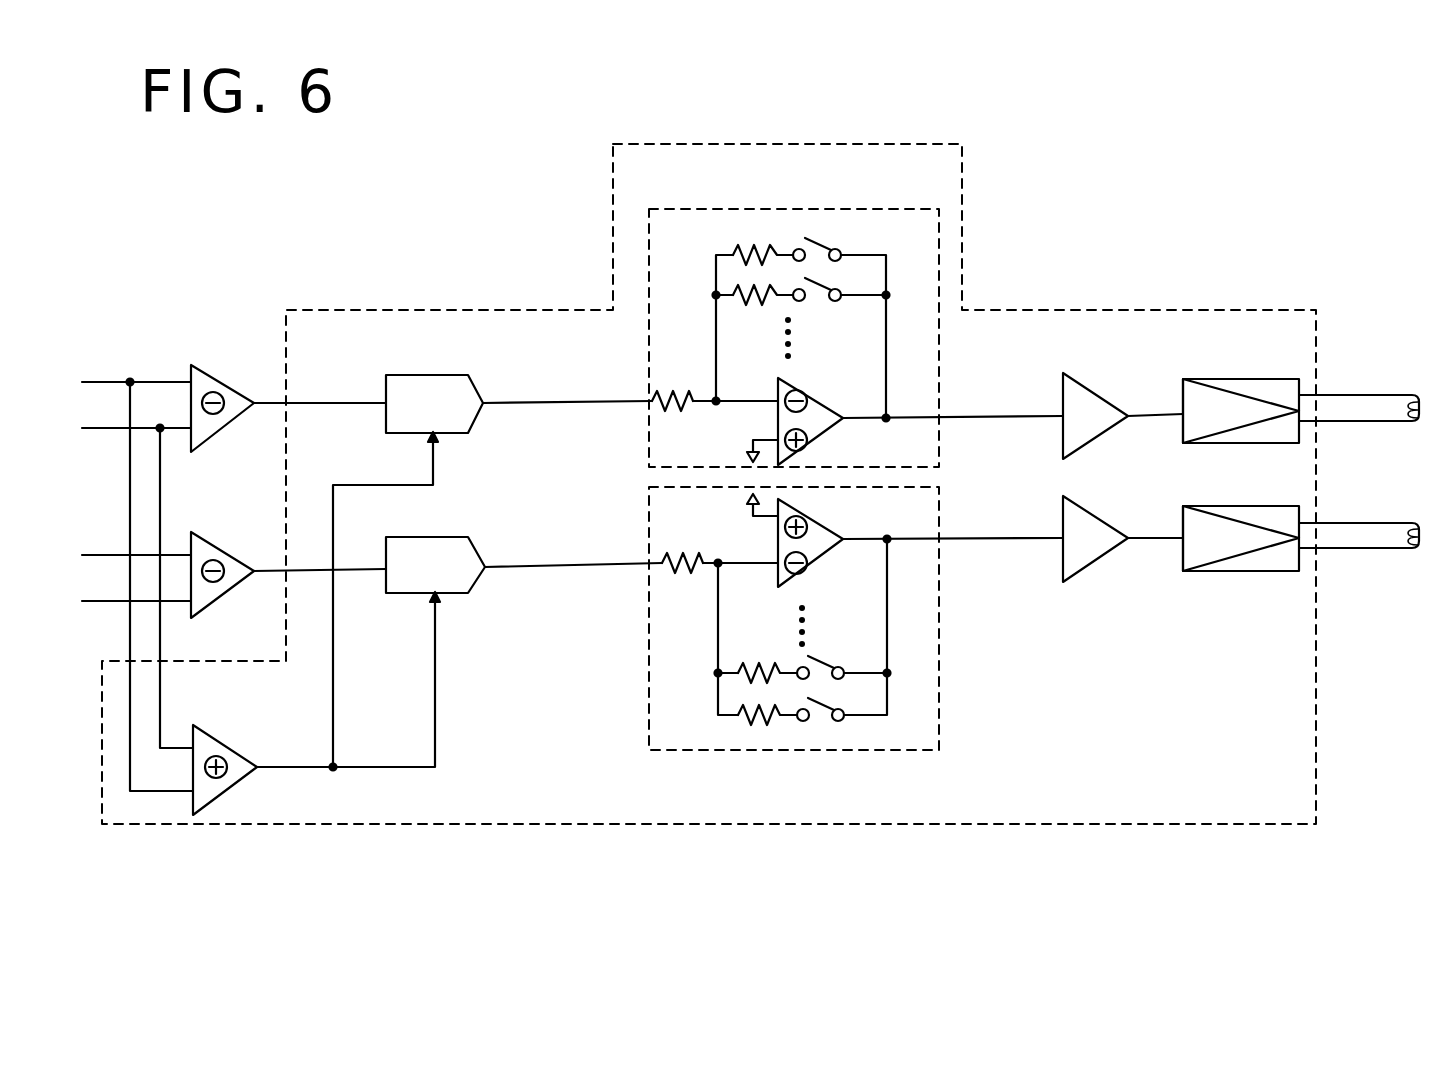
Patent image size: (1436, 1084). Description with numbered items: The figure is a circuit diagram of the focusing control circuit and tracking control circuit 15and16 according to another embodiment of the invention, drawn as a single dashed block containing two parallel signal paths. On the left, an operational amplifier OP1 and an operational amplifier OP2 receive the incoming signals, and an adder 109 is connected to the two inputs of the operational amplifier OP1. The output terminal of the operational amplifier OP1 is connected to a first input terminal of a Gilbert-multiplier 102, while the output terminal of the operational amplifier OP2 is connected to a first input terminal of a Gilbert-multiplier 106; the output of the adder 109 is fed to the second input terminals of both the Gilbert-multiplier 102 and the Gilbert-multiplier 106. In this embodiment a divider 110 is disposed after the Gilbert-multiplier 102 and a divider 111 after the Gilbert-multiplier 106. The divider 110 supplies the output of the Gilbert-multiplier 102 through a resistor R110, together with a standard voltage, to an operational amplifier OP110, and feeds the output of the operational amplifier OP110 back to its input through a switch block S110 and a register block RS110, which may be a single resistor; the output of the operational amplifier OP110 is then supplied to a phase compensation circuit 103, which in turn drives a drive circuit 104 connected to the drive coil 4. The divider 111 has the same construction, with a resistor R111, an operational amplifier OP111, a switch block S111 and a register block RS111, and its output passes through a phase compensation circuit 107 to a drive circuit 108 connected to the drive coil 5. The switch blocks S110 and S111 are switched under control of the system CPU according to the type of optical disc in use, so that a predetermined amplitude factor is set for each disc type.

The operational amplifier OP1 is at (240, 352).
The operational amplifier OP2 is at (240, 520).
The adder 109 is at (220, 738).
The Gilbert-multiplier 102 is at (440, 374).
The Gilbert-multiplier 106 is at (448, 537).
The divider 110 is at (648, 358).
The resistor R110 is at (678, 394).
The register block RS110 is at (758, 240).
The switch block S110 is at (830, 238).
The operational amplifier OP110 is at (830, 430).
The divider 111 is at (649, 676).
The resistor R111 is at (682, 572).
The register block RS111 is at (756, 728).
The switch block S111 is at (822, 726).
The operational amplifier OP111 is at (828, 528).
The focusing control circuit and tracking control circuit 15and16 is at (1110, 309).
The phase compensation circuit 103 is at (1090, 384).
The drive circuit 104 is at (1228, 379).
The phase compensation circuit 107 is at (1090, 514).
The drive circuit 108 is at (1228, 508).
The drive coil 4 is at (1370, 395).
The drive coil 5 is at (1370, 523).